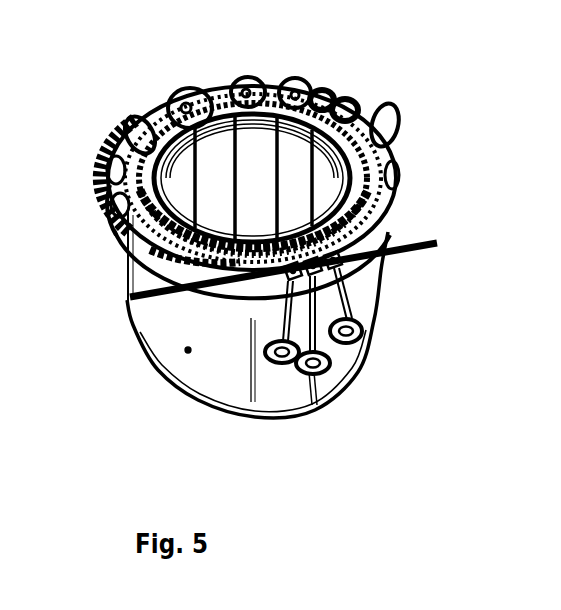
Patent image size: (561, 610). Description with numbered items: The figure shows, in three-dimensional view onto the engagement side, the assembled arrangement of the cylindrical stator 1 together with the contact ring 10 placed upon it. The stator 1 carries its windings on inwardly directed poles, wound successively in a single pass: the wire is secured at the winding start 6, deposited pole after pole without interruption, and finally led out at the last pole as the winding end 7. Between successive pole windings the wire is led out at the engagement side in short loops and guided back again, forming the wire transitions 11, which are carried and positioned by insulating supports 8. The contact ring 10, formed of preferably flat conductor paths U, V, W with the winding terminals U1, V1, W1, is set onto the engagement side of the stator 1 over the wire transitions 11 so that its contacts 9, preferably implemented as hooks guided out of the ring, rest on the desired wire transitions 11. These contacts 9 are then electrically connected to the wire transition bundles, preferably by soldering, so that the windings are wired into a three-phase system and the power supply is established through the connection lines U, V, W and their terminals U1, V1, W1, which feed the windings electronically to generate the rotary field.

The stator 1 is at (188, 350).
The winding start 6 is at (147, 300).
The winding end 7 is at (408, 258).
The insulating supports 8 is at (167, 100).
The contact sites 9 is at (318, 86).
The contact ring 10 is at (137, 122).
The wire transitions 11 is at (390, 217).
The connection line U is at (375, 268).
The connection line V is at (316, 403).
The connection line W is at (215, 405).
The winding terminal U1 is at (370, 343).
The winding terminal V1 is at (345, 378).
The winding terminal W1 is at (268, 395).